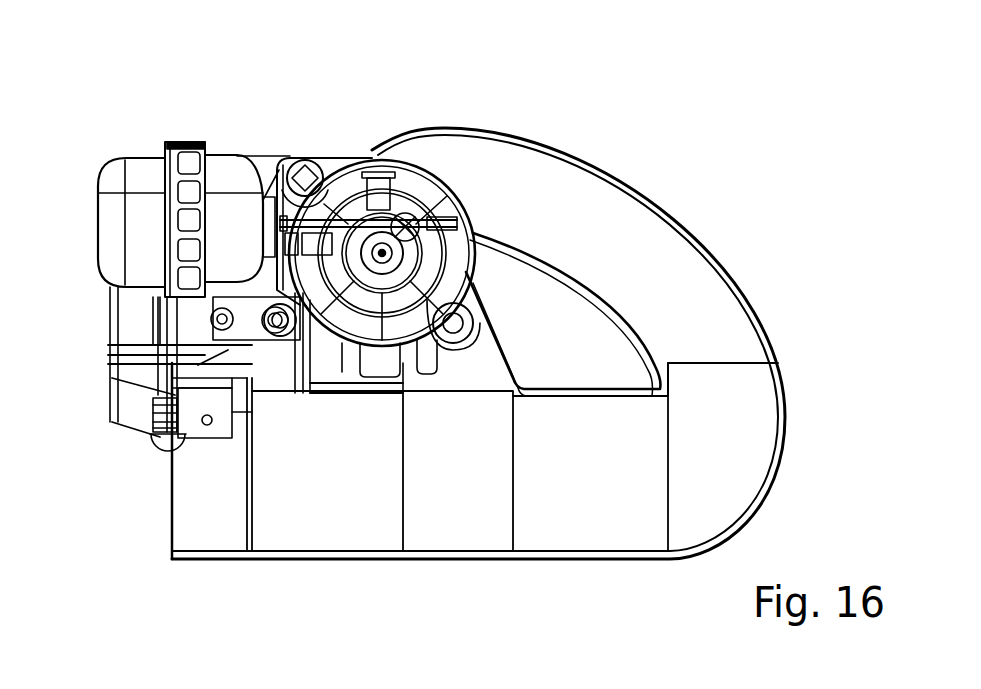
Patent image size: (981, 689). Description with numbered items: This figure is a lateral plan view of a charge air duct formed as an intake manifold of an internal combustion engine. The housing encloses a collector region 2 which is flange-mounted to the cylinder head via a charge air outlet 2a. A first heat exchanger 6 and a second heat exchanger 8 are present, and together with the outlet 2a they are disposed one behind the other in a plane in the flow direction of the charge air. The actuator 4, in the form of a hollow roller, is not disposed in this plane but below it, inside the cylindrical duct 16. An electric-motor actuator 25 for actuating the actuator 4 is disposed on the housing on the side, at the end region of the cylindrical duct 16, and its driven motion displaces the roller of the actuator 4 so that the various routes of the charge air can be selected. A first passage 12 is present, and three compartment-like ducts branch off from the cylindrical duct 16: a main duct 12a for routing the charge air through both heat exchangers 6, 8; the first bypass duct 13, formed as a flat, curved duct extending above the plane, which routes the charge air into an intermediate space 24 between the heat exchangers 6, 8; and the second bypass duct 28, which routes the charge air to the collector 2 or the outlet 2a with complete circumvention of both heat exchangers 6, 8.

The collector region 2 is at (212, 518).
The charge air outlet 2a is at (168, 498).
The actuator 4 is at (455, 188).
The cylindrical duct 16 is at (455, 188).
The first heat exchanger 6 is at (613, 487).
The second heat exchanger 8 is at (358, 500).
The first passage 12 is at (439, 225).
The main duct 12a is at (628, 242).
The first bypass duct 13 is at (483, 351).
The intermediate space 24 is at (460, 503).
The electric-motor actuator 25 is at (145, 138).
The second bypass duct 28 is at (253, 357).